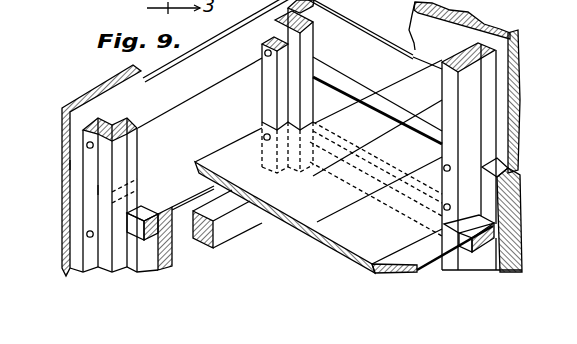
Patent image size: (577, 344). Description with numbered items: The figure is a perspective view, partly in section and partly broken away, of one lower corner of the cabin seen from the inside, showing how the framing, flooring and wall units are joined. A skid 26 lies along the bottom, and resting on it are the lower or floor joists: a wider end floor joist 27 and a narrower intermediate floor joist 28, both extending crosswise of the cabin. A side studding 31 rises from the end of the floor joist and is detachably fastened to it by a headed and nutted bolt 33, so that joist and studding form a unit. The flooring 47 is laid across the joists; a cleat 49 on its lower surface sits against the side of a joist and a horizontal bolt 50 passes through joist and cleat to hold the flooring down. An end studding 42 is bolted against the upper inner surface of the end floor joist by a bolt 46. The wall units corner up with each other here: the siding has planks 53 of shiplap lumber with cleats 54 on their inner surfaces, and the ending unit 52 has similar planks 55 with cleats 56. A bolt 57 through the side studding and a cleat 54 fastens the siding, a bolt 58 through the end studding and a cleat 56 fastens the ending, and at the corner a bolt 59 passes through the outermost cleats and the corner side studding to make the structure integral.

The ending unit 52 is at (10, 14).
The planks 55 is at (280, 139).
The end floor joist 27 is at (371, 95).
The side studding 31 is at (132, 126).
The headed and nutted bolt 59 is at (265, 53).
The cleat 56 is at (307, 13).
The end studding 42 is at (453, 91).
The headed and nutted bolt 57 is at (86, 145).
The planks 53 is at (80, 163).
The cleat 54 is at (92, 188).
The headed and nutted bolt 33 is at (86, 234).
The headed and nutted bolt 58 is at (445, 167).
The cleat 49 is at (136, 212).
The intermediate floor joist 28 is at (173, 258).
The skid 26 is at (232, 226).
The flooring 47 is at (308, 213).
The headed and nutted bolt 46 is at (445, 206).
The headed and nutted bolt 50 is at (458, 232).